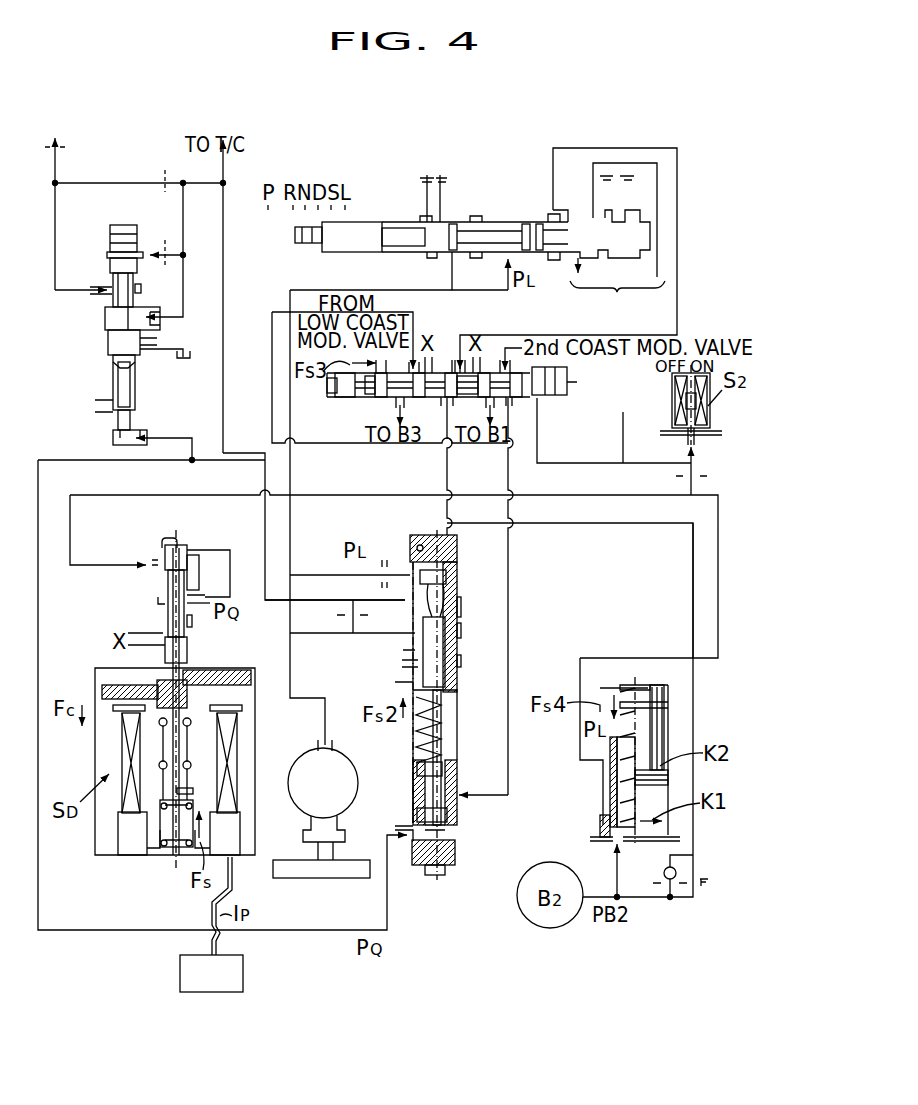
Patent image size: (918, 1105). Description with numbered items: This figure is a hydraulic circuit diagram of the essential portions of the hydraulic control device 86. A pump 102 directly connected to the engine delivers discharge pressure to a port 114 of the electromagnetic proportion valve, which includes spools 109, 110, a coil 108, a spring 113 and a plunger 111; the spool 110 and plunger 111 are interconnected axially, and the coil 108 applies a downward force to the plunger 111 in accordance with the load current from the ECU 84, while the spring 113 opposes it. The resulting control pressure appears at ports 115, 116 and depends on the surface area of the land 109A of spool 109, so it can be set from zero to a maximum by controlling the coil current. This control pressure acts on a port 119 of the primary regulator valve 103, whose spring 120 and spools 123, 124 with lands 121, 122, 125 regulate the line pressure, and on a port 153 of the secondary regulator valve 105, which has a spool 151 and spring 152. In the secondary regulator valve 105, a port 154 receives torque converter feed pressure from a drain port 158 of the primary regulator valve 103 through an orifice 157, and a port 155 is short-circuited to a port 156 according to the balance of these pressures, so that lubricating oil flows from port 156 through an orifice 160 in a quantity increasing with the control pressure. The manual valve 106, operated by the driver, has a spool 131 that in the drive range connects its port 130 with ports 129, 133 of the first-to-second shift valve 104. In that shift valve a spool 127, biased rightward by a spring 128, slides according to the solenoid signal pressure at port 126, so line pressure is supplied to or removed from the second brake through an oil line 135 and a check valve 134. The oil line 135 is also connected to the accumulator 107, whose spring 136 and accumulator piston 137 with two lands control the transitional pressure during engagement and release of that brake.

The ECU 84 is at (246, 976).
The hydraulic control device 86 is at (582, 142).
The pump 102 is at (350, 781).
The primary regulator valve 103 is at (443, 886).
The 1-2 shift valve 104 is at (553, 403).
The secondary regulator valve 105 is at (96, 340).
The manual valve 106 is at (475, 229).
The accumulator 107 is at (603, 790).
The coil 108 is at (222, 758).
The spool 109 is at (182, 548).
The land 109A is at (158, 552).
The spool 110 is at (188, 665).
The plunger 111 is at (252, 682).
The spring 113 is at (203, 780).
The port 114 is at (155, 568).
The port 115 is at (199, 591).
The port 116 is at (200, 548).
The port 119 is at (403, 841).
The spring 120 is at (444, 724).
The land 121 is at (444, 570).
The land 122 is at (444, 758).
The spool 123 is at (444, 640).
The spool 124 is at (527, 771).
The land 125 is at (454, 818).
The port 126 is at (537, 430).
The spool 127 is at (373, 397).
The spring 128 is at (328, 394).
The port 129 is at (456, 366).
The port 130 is at (552, 222).
The spool 131 is at (486, 252).
The port 133 is at (462, 397).
The check valve 134 is at (712, 890).
The oil line 135 is at (692, 570).
The spring 136 is at (291, 495).
The accumulator piston 137 is at (652, 745).
The spool 151 is at (118, 224).
The spring 152 is at (134, 391).
The port 153 is at (136, 440).
The port 154 is at (140, 257).
The port 155 is at (160, 318).
The port 156 is at (104, 284).
The orifice 157 is at (165, 250).
The drain port 158 is at (375, 583).
The orifice 160 is at (161, 179).